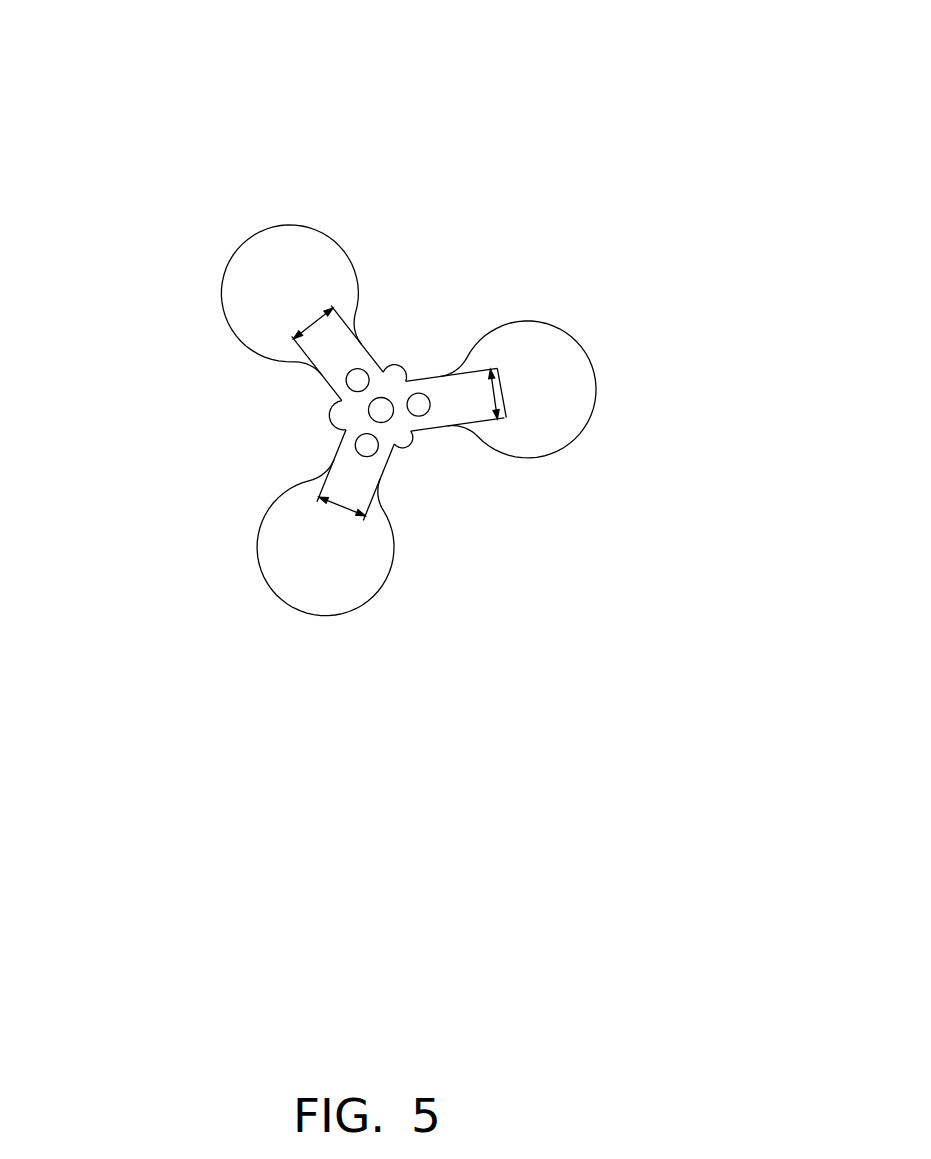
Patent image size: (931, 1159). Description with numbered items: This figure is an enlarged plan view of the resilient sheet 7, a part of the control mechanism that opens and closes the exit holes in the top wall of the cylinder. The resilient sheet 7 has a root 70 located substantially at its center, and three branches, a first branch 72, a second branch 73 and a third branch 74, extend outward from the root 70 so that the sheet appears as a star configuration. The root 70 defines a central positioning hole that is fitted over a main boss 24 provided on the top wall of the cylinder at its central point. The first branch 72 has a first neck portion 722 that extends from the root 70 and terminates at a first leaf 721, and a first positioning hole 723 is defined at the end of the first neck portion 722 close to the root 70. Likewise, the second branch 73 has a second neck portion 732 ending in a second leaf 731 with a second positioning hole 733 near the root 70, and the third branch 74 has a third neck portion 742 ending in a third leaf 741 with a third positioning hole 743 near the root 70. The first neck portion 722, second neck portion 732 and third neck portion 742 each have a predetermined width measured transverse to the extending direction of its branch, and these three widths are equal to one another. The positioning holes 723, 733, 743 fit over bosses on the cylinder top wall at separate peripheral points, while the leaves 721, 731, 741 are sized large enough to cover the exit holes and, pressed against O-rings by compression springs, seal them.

The resilient sheet 7 is at (493, 123).
The root 70 is at (430, 418).
The main boss 24 is at (381, 410).
The first branch 72 is at (286, 256).
The first leaf 721 is at (308, 263).
The first neck portion 722 is at (371, 357).
The first positioning hole 723 is at (358, 380).
The second branch 73 is at (282, 583).
The second leaf 731 is at (313, 568).
The second neck portion 732 is at (395, 450).
The second positioning hole 733 is at (367, 445).
The third branch 74 is at (591, 410).
The third leaf 741 is at (542, 415).
The third neck portion 742 is at (437, 428).
The third positioning hole 743 is at (419, 405).